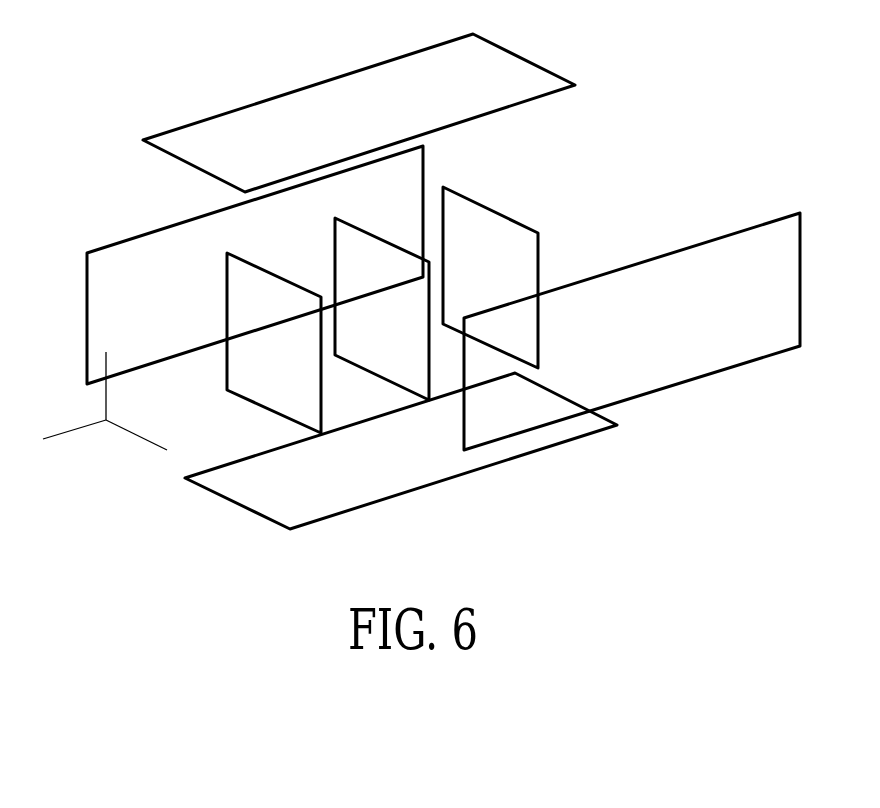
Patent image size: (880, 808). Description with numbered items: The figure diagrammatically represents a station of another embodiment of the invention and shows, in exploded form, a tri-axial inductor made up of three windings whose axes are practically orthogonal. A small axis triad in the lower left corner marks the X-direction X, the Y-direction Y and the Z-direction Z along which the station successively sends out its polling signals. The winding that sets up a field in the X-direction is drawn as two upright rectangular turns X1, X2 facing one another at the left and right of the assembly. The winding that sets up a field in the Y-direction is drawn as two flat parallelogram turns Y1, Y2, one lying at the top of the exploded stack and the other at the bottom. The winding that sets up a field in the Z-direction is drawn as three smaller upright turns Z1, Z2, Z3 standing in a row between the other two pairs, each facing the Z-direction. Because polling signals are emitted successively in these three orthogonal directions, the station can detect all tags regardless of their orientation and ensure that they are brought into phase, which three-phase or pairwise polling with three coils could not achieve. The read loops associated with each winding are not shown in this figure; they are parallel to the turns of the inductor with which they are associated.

The turn of X-direction winding X1 is at (255, 265).
The turn of X-direction winding X2 is at (632, 320).
The turn of Y-direction winding Y1 is at (401, 467).
The turn of Y-direction winding Y2 is at (357, 113).
The turn of Z-direction winding Z1 is at (274, 335).
The turn of Z-direction winding Z2 is at (382, 300).
The turn of Z-direction winding Z3 is at (490, 270).
The X-direction X is at (144, 443).
The Y-direction Y is at (105, 373).
The Z-direction Z is at (67, 439).